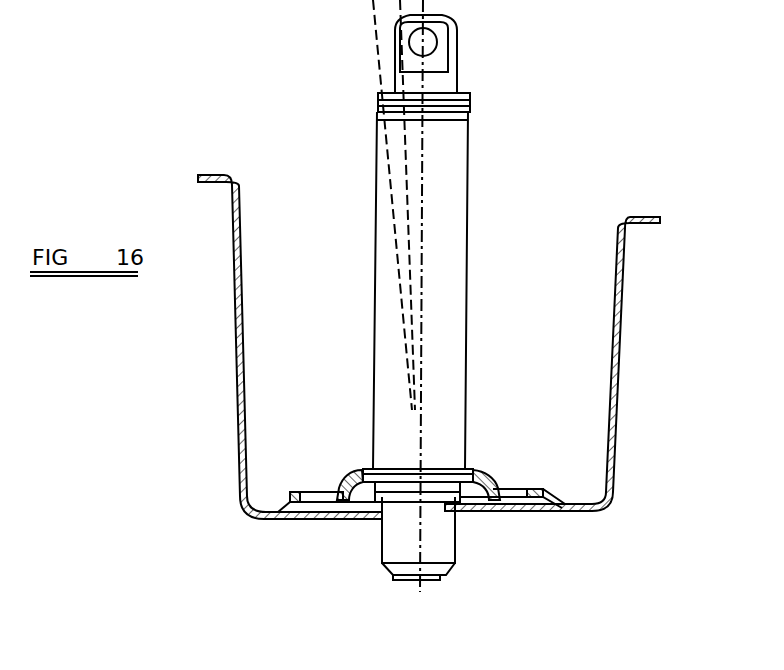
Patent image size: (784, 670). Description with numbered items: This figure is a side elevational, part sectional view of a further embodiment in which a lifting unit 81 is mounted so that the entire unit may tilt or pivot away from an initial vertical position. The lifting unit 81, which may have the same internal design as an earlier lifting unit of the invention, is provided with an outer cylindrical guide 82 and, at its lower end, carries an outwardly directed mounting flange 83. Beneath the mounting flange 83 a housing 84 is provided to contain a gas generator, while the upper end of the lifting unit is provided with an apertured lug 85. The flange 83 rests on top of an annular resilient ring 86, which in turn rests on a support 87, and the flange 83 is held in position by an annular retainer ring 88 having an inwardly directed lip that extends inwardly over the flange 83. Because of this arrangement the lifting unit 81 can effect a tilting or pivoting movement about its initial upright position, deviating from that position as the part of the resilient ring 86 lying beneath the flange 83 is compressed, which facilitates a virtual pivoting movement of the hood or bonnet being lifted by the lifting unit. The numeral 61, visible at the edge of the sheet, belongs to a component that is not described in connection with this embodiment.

The component of adjacent figure 61 is at (20, 0).
The lifting unit 81 is at (485, 278).
The outer cylindrical guide 82 is at (465, 336).
The mounting flange 83 is at (472, 516).
The housing 84 is at (443, 543).
The apertured lug 85 is at (450, 62).
The annular resilient ring 86 is at (368, 516).
The support 87 is at (350, 512).
The annular retainer ring 88 is at (344, 470).